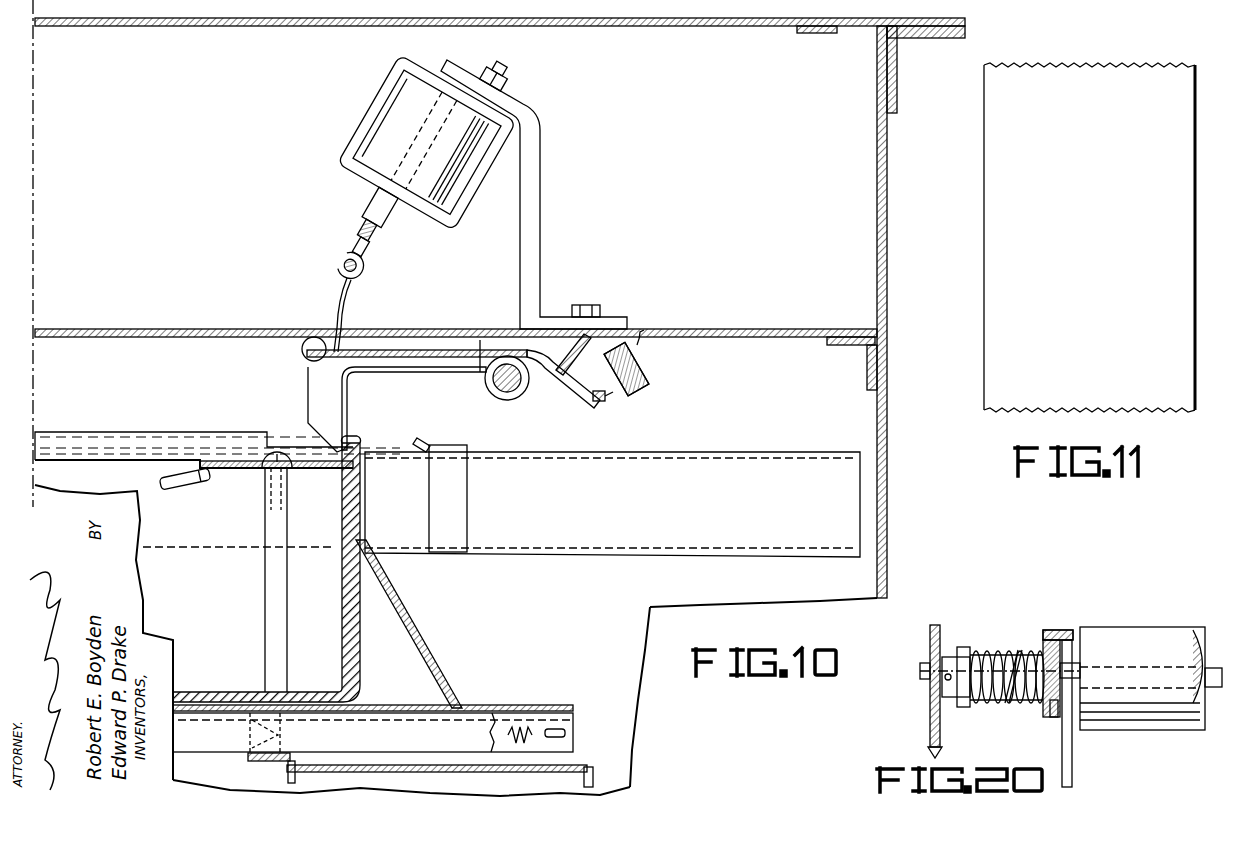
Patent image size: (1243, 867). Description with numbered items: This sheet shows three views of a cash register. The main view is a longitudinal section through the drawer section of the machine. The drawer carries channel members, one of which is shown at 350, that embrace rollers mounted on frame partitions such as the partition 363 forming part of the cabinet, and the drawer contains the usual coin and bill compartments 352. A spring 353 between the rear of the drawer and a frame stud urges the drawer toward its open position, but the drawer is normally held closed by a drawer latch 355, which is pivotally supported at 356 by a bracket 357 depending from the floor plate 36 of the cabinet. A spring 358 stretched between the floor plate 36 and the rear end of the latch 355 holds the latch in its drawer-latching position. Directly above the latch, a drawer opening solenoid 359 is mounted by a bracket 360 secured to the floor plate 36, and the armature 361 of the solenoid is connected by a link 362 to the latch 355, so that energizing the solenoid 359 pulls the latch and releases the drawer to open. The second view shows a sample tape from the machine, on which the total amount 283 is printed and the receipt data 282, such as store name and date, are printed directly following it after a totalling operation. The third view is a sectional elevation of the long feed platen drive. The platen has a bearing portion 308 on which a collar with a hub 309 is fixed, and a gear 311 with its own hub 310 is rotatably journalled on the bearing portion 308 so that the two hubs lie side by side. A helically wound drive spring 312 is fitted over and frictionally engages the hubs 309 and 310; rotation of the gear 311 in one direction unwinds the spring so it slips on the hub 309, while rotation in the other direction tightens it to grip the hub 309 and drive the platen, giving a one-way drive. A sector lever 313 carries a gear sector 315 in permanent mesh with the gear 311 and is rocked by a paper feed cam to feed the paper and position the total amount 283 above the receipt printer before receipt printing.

In FIG. 10, the floor plate 36 is at (423, 325).
In FIG. 10, the channel member 350 is at (587, 450).
In FIG. 10, the coin and bill compartments 352 is at (237, 482).
In FIG. 10, the spring 353 is at (518, 726).
In FIG. 10, the drawer latch 355 is at (333, 395).
In FIG. 10, the pivot 356 is at (490, 398).
In FIG. 10, the bracket 357 is at (487, 340).
In FIG. 10, the spring 358 is at (648, 373).
In FIG. 10, the drawer opening solenoid 359 is at (385, 87).
In FIG. 10, the bracket 360 is at (530, 219).
In FIG. 10, the armature 361 is at (370, 205).
In FIG. 10, the link 362 is at (342, 283).
In FIG. 10, the frame partition 363 is at (845, 594).
In FIG. 11, the receipt data 282 is at (1010, 316).
In FIG. 11, the total amount 283 is at (1080, 282).
In FIG. 20, the bearing portion 308 is at (925, 672).
In FIG. 20, the hub 309 is at (1003, 648).
In FIG. 20, the hub 310 is at (1018, 705).
In FIG. 20, the gear 311 is at (1052, 718).
In FIG. 20, the drive spring 312 is at (1048, 630).
In FIG. 20, the sector lever 313 is at (1073, 763).
In FIG. 20, the gear sector 315 is at (1043, 642).